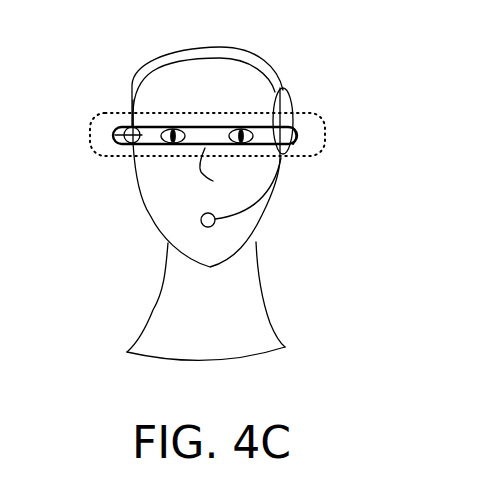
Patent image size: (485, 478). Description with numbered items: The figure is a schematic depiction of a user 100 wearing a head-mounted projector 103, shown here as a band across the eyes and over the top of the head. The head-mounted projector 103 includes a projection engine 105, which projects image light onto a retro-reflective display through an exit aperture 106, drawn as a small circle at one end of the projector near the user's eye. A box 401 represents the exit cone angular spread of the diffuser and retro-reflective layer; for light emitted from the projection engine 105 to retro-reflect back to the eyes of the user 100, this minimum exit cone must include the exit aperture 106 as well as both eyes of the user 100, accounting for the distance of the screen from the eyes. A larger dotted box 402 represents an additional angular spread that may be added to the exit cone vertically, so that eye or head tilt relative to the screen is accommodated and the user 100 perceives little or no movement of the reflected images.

The user 100 is at (227, 352).
The head-mounted projector 103 is at (168, 43).
The projection engine 105 is at (113, 134).
The exit aperture 106 is at (128, 143).
The box representing exit cone angular spread 401 is at (298, 133).
The box representing added angular spread 402 is at (327, 130).